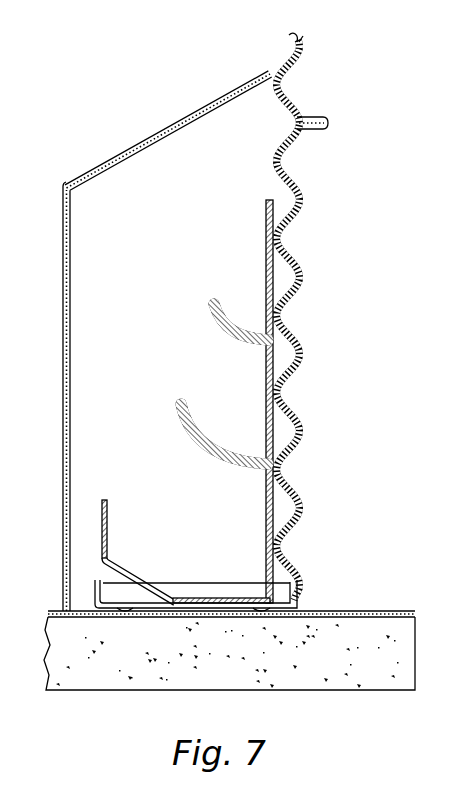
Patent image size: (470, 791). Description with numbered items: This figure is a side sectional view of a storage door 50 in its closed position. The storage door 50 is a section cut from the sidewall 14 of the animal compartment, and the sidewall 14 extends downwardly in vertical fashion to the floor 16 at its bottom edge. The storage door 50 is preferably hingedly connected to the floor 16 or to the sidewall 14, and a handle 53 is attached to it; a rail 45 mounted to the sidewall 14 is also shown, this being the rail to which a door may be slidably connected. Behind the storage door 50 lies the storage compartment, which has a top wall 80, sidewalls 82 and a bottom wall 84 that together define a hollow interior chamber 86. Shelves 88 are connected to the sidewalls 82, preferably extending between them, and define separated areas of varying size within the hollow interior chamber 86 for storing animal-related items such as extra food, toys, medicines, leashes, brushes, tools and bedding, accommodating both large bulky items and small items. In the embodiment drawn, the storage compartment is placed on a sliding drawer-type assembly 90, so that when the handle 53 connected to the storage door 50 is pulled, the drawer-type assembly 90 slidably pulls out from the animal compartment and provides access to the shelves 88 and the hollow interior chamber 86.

The sidewall 14 is at (291, 46).
The floor 16 is at (47, 611).
The rail 45 is at (100, 579).
The storage door 50 is at (329, 239).
The handle 53 is at (322, 118).
The top wall 80 is at (170, 130).
The sidewalls 82 is at (63, 440).
The bottom wall 84 is at (125, 615).
The hollow interior chamber 86 is at (144, 216).
The shelves 88 is at (213, 303).
The sliding drawer-type assembly 90 is at (383, 157).